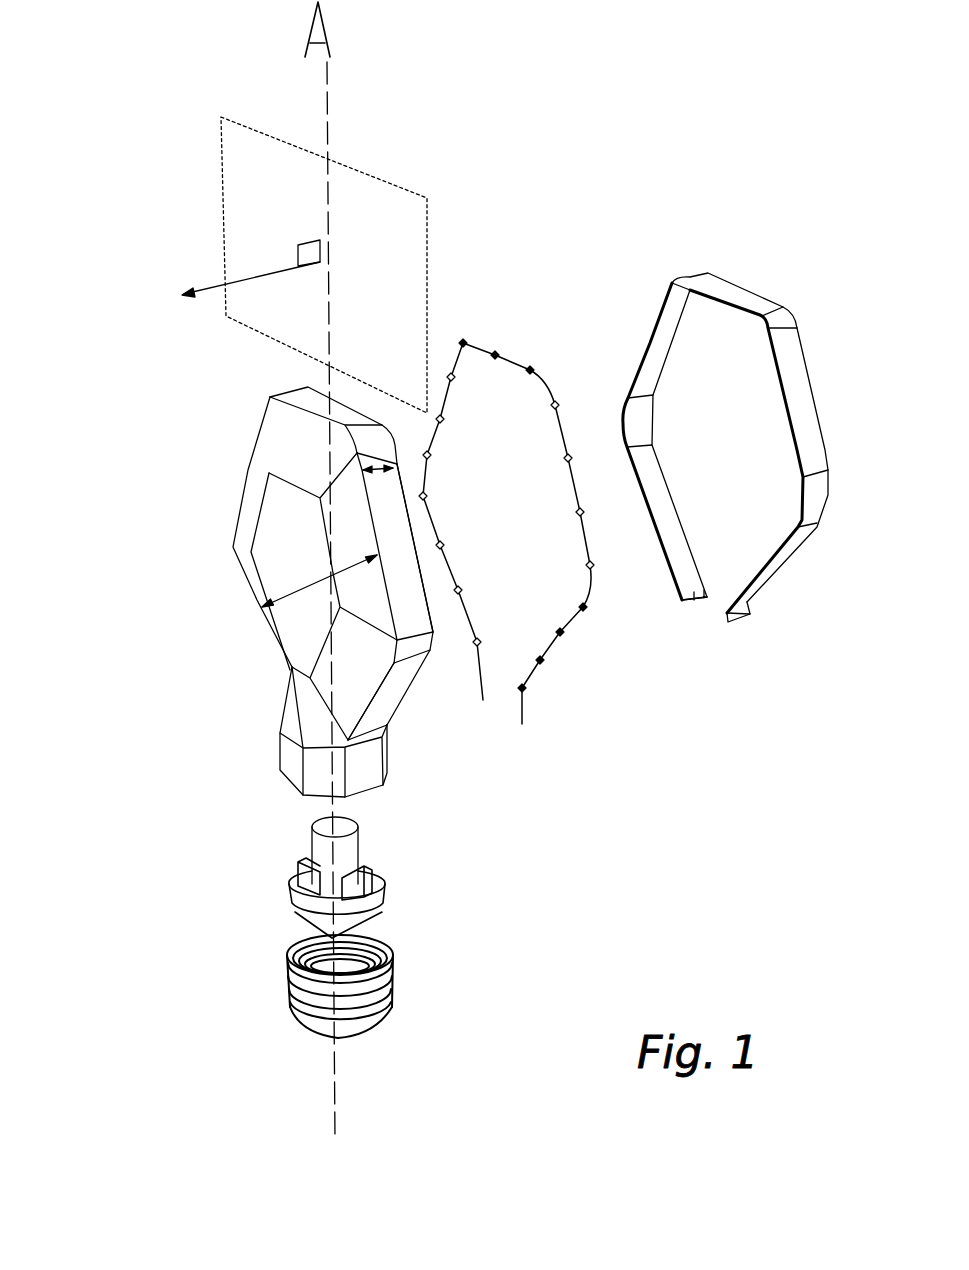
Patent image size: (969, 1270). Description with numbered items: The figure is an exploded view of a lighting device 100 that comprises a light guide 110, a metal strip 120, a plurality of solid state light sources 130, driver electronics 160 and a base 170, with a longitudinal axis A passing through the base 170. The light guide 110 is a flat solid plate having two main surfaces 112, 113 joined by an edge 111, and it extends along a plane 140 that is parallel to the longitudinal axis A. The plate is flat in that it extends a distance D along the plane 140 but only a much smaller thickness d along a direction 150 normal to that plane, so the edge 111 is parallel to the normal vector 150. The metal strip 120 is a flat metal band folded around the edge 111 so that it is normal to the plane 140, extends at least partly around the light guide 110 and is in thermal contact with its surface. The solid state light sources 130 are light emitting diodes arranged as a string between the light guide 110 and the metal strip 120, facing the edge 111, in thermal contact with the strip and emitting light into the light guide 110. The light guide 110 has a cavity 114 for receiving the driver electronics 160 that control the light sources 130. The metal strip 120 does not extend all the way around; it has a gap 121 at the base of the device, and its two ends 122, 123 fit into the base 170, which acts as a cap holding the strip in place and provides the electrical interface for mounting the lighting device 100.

The lighting device 100 is at (184, 124).
The light guide 110 is at (197, 449).
The edge 111 is at (403, 673).
The main surface 112 is at (296, 628).
The main surface 113 is at (416, 525).
The cavity 114 is at (290, 788).
The metal strip 120 is at (786, 249).
The gap 121 is at (715, 590).
The end of metal band 122 is at (693, 597).
The end of metal band 123 is at (753, 604).
The solid state light sources 130 is at (510, 360).
The plane 140 is at (428, 240).
The normal vector 150 is at (212, 287).
The driver electronics 160 is at (387, 913).
The base 170 is at (387, 1007).